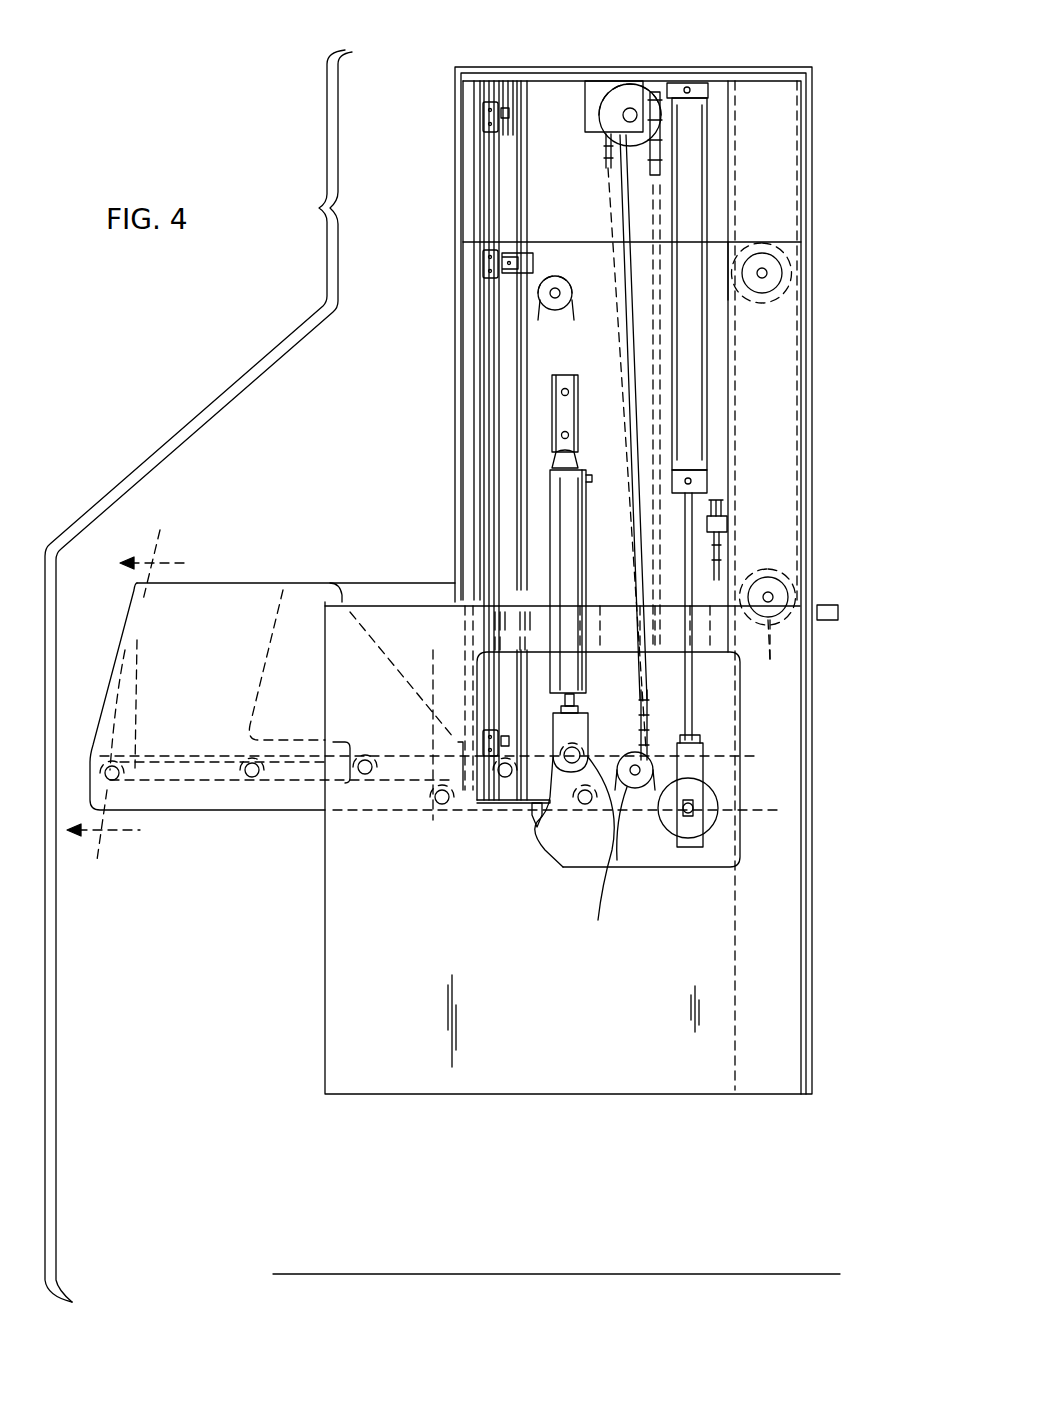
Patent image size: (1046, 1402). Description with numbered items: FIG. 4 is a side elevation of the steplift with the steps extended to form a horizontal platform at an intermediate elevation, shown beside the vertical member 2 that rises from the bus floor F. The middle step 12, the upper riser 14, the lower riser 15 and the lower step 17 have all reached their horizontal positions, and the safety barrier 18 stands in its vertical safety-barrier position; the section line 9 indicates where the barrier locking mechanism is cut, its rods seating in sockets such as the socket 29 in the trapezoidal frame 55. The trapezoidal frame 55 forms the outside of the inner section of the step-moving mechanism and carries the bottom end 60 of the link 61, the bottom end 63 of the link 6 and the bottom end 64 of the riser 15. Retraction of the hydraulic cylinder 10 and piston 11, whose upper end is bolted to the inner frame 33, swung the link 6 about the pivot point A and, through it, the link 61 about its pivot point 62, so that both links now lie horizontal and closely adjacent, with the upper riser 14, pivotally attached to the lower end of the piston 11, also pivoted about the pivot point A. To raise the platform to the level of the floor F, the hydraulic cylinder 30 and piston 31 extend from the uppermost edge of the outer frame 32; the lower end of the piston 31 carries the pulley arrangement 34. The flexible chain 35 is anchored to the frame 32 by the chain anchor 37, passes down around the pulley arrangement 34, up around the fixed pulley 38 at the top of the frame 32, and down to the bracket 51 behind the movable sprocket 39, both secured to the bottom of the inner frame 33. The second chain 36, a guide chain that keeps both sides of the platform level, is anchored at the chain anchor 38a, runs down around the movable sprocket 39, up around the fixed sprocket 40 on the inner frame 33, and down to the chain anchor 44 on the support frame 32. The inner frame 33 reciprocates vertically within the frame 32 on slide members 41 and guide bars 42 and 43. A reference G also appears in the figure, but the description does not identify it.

The vertical member 2 is at (770, 645).
The link 6 is at (418, 748).
The section line 9 is at (140, 695).
The hydraulic cylinder 10 is at (574, 556).
The piston 11 is at (582, 697).
The middle step 12 is at (401, 716).
The upper riser 14 is at (592, 752).
The lower riser 15 is at (290, 758).
The lower step 17 is at (200, 755).
The safety barrier 18 is at (138, 713).
The socket 29 is at (124, 720).
The hydraulic cylinder 30 is at (693, 210).
The piston 31 is at (688, 556).
The outer frame 32 is at (727, 62).
The inner frame 33 is at (710, 243).
The pulley arrangement 34 is at (642, 790).
The flexible chain 35 is at (605, 160).
The second chain 36 is at (648, 230).
The chain anchor 37 is at (727, 515).
The fixed pulley 38 is at (632, 147).
The chain anchor 38a is at (683, 92).
The movable sprocket 39 is at (605, 890).
The fixed sprocket 40 is at (562, 282).
The slide members 41 is at (766, 300).
The guide bar 42 is at (500, 178).
The guide bar 43 is at (528, 250).
The chain anchor 44 is at (534, 822).
The bracket 51 is at (640, 738).
The trapezoidal frame 55 is at (247, 582).
The bottom end of link 60 is at (442, 810).
The link 61 is at (541, 866).
The pivot point 62 is at (740, 835).
The bottom end of link 63 is at (362, 760).
The bottom end of riser 64 is at (252, 784).
The pivot point A is at (590, 860).
The bus floor F is at (838, 612).
The ground G is at (348, 1274).